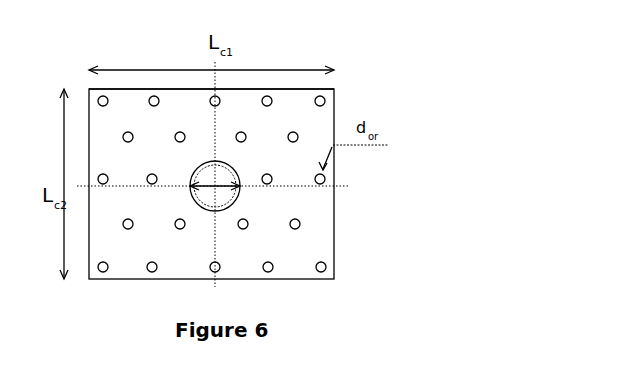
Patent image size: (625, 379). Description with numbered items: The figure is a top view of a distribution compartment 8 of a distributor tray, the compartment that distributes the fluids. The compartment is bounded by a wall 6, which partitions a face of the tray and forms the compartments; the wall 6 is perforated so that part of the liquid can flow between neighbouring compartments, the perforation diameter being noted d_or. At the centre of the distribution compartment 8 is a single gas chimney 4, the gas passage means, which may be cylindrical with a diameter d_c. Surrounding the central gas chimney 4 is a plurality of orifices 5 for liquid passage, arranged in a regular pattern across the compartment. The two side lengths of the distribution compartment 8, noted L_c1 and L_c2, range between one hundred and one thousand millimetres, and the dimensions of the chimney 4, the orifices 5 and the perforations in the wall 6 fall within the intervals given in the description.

The gas chimney 4 is at (225, 172).
The orifices 5 is at (326, 78).
The wall 6 is at (334, 193).
The distribution compartment 8 is at (483, 83).